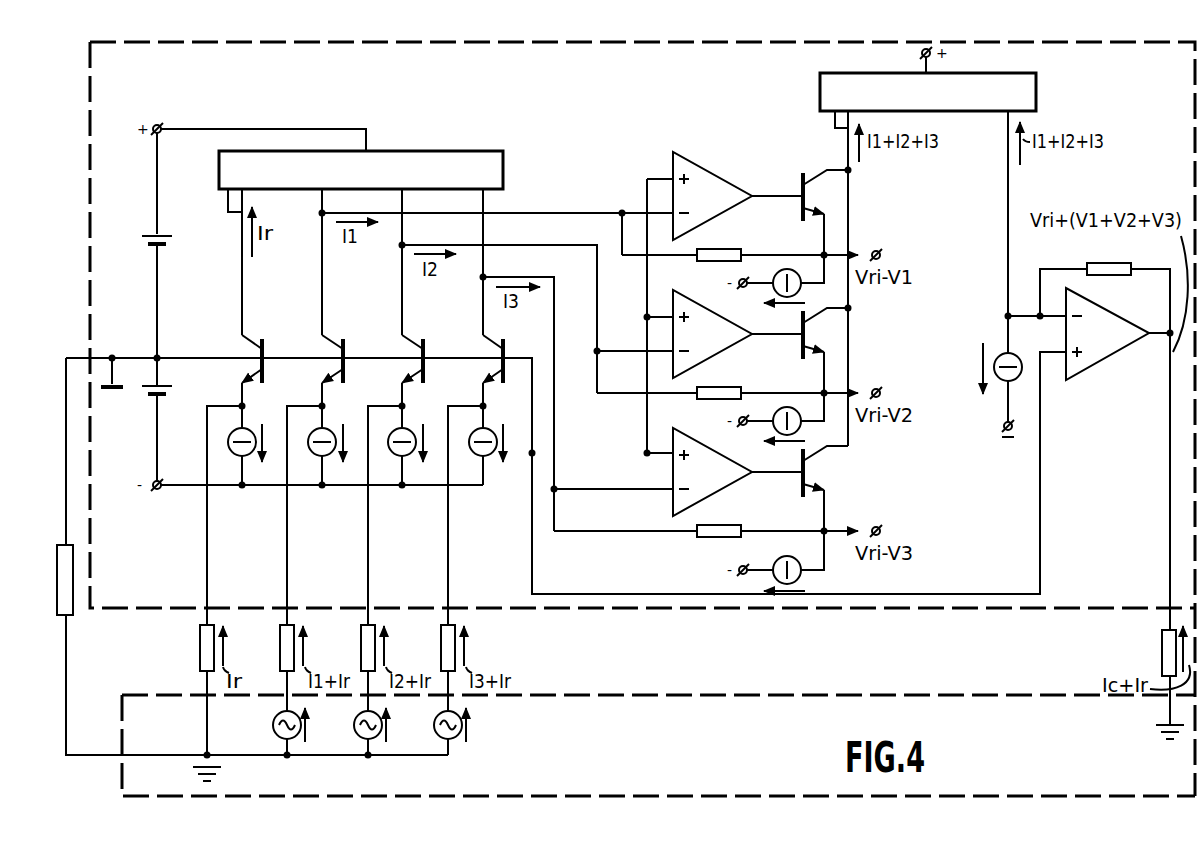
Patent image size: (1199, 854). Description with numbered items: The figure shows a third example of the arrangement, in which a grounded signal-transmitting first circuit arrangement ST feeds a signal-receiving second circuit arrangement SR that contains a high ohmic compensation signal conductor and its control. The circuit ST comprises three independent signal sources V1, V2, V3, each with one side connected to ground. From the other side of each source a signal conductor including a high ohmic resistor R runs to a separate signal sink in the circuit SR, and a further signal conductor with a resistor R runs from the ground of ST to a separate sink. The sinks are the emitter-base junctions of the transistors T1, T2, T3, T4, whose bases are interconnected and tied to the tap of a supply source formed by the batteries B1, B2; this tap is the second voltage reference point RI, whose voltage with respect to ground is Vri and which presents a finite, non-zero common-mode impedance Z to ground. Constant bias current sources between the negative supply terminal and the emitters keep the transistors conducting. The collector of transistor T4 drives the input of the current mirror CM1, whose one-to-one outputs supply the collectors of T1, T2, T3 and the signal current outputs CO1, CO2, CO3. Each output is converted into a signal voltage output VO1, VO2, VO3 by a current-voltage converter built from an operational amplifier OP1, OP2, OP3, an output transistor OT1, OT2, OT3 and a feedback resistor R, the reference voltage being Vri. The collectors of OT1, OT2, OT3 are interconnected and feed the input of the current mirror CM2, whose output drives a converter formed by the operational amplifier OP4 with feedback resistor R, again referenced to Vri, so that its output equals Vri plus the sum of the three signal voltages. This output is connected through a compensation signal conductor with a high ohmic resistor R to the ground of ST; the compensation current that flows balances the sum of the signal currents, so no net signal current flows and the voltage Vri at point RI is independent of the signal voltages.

The current mirror CM1 is at (439, 151).
The current mirror CM2 is at (971, 73).
The battery B1 is at (172, 240).
The battery B2 is at (169, 390).
The second voltage reference point RI is at (112, 358).
The voltage of the second voltage reference point Vri is at (158, 358).
The transistor T1 is at (347, 360).
The transistor T2 is at (428, 358).
The transistor T3 is at (508, 358).
The transistor T4 is at (266, 360).
The signal current output CO1 is at (514, 214).
The signal current output CO2 is at (514, 247).
The signal current output CO3 is at (555, 365).
The operational amplifier OP1 is at (729, 178).
The operational amplifier OP2 is at (729, 316).
The operational amplifier OP3 is at (729, 454).
The operational amplifier OP4 is at (1112, 368).
The output transistor OT1 is at (802, 185).
The output transistor OT2 is at (802, 323).
The output transistor OT3 is at (802, 461).
The signal voltage output VO1 is at (894, 253).
The signal voltage output VO2 is at (894, 391).
The signal voltage output VO3 is at (894, 529).
The resistor R is at (705, 255).
The impedance Z is at (74, 596).
The signal-receiving second circuit arrangement SR is at (1063, 612).
The signal-transmitting first circuit arrangement ST is at (1055, 696).
The signal source V1 is at (302, 713).
The signal source V2 is at (383, 713).
The signal source V3 is at (463, 713).